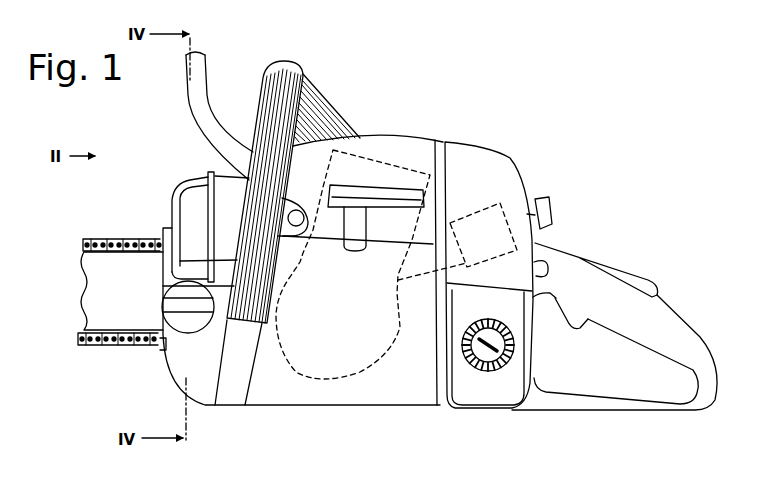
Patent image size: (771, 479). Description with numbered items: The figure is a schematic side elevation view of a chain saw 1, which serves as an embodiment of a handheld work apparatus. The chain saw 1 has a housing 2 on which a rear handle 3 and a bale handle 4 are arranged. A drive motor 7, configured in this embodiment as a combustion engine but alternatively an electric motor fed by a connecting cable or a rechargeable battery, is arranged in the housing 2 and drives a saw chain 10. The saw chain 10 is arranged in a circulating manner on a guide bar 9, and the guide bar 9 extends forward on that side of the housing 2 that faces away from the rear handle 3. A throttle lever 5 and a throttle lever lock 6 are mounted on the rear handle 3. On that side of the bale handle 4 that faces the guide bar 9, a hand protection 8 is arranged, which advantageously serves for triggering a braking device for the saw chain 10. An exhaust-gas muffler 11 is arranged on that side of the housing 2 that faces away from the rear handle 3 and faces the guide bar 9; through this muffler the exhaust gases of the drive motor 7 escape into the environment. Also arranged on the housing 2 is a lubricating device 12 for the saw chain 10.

The chain saw 1 is at (604, 101).
The housing 2 is at (272, 390).
The rear handle 3 is at (645, 314).
The bale handle 4 is at (297, 94).
The throttle lever 5 is at (577, 317).
The throttle lever lock 6 is at (638, 279).
The drive motor 7 is at (395, 166).
The hand protection 8 is at (192, 100).
The guide bar 9 is at (129, 278).
The saw chain 10 is at (101, 237).
The exhaust-gas muffler 11 is at (192, 207).
The lubricating device 12 is at (166, 342).